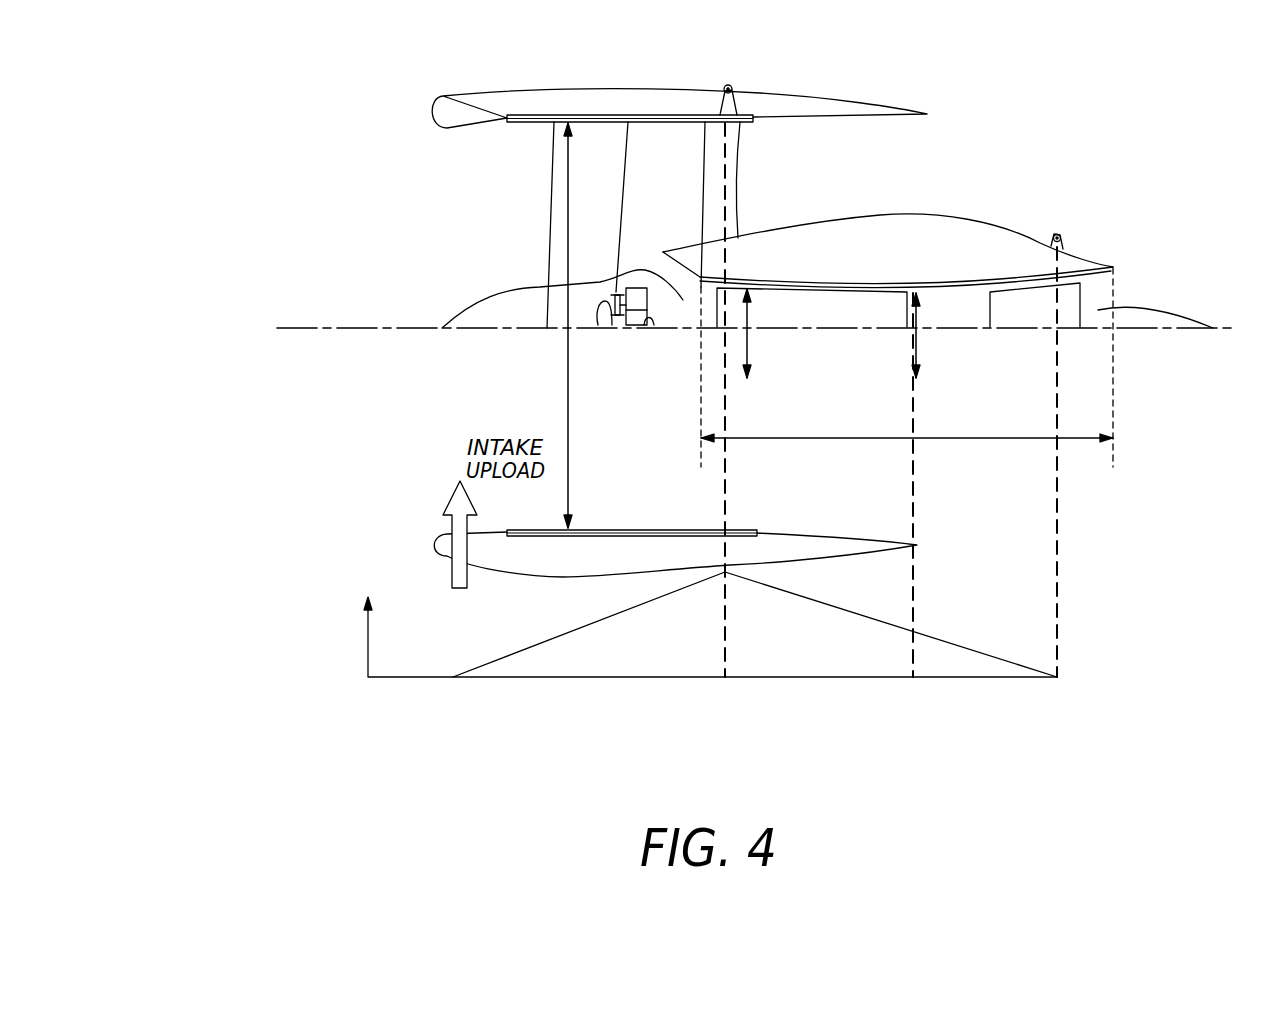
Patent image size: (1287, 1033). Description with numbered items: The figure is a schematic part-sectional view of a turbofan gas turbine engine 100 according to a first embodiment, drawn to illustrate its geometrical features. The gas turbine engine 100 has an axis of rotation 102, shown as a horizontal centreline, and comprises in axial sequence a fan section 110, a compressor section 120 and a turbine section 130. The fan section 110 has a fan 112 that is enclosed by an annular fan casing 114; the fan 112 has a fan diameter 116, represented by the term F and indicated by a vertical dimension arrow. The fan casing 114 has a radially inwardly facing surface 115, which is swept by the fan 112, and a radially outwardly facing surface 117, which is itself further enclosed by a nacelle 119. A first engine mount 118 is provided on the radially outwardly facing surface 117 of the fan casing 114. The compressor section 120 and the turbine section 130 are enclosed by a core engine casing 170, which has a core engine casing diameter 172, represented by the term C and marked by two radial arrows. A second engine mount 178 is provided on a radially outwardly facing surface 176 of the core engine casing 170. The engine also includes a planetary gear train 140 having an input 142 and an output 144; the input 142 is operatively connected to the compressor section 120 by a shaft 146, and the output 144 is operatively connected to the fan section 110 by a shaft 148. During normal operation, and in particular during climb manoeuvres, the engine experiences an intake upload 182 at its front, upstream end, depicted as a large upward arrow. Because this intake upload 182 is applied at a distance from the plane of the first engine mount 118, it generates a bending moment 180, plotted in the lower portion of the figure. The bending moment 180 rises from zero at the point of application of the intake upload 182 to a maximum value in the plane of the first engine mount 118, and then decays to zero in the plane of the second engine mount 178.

The gas turbine engine 100 is at (306, 94).
The axis of rotation 102 is at (412, 326).
The fan section 110 is at (534, 228).
The fan 112 is at (555, 197).
The fan casing 114 is at (664, 114).
The radially inwardly facing surface 115 is at (650, 123).
The fan diameter 116 is at (567, 410).
The radially outwardly facing surface 117 is at (628, 114).
The first engine mount 118 is at (735, 89).
The nacelle 119 is at (562, 100).
The compressor section 120 is at (812, 300).
The turbine section 130 is at (1022, 295).
The planetary gear train 140 is at (636, 288).
The input 142 is at (671, 248).
The output 144 is at (621, 292).
The shaft 146 is at (648, 326).
The shaft 148 is at (599, 326).
The core engine casing 170 is at (846, 285).
The core engine casing diameter 172 is at (751, 346).
The radially outwardly facing surface 176 is at (935, 285).
The second engine mount 178 is at (1063, 240).
The bending moment 180 is at (368, 661).
The intake upload 182 is at (447, 498).